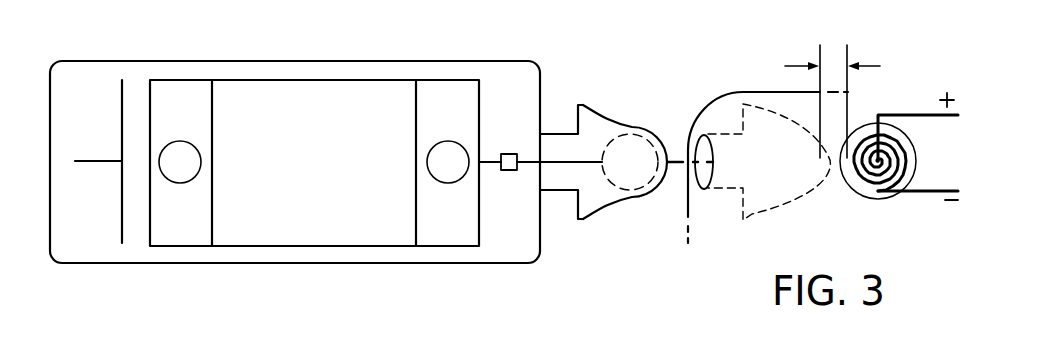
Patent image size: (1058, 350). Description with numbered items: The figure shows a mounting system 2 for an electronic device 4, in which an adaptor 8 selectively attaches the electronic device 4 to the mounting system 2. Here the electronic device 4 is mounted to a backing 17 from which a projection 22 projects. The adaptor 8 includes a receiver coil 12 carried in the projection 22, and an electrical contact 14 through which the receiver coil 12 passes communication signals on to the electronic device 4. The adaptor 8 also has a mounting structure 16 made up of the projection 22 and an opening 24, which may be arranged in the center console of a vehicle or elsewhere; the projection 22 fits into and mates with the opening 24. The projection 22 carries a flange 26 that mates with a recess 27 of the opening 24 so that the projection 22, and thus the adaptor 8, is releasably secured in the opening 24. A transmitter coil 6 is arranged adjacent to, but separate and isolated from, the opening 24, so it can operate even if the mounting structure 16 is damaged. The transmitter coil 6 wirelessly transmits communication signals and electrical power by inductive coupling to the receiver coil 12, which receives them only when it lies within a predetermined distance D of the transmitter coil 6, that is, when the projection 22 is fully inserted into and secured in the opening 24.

The mounting system 2 is at (899, 119).
The electronic device 4 is at (245, 225).
The transmitter coil 6 is at (875, 192).
The adaptor 8 is at (578, 173).
The receiver coil 12 is at (633, 147).
The electrical contact 14 is at (509, 171).
The mounting structure 16 is at (623, 240).
The backing 17 is at (72, 80).
The projection 22 is at (610, 118).
The opening 24 is at (703, 133).
The flange 26 is at (582, 105).
The recess 27 is at (752, 211).
The predetermined distance D is at (797, 62).